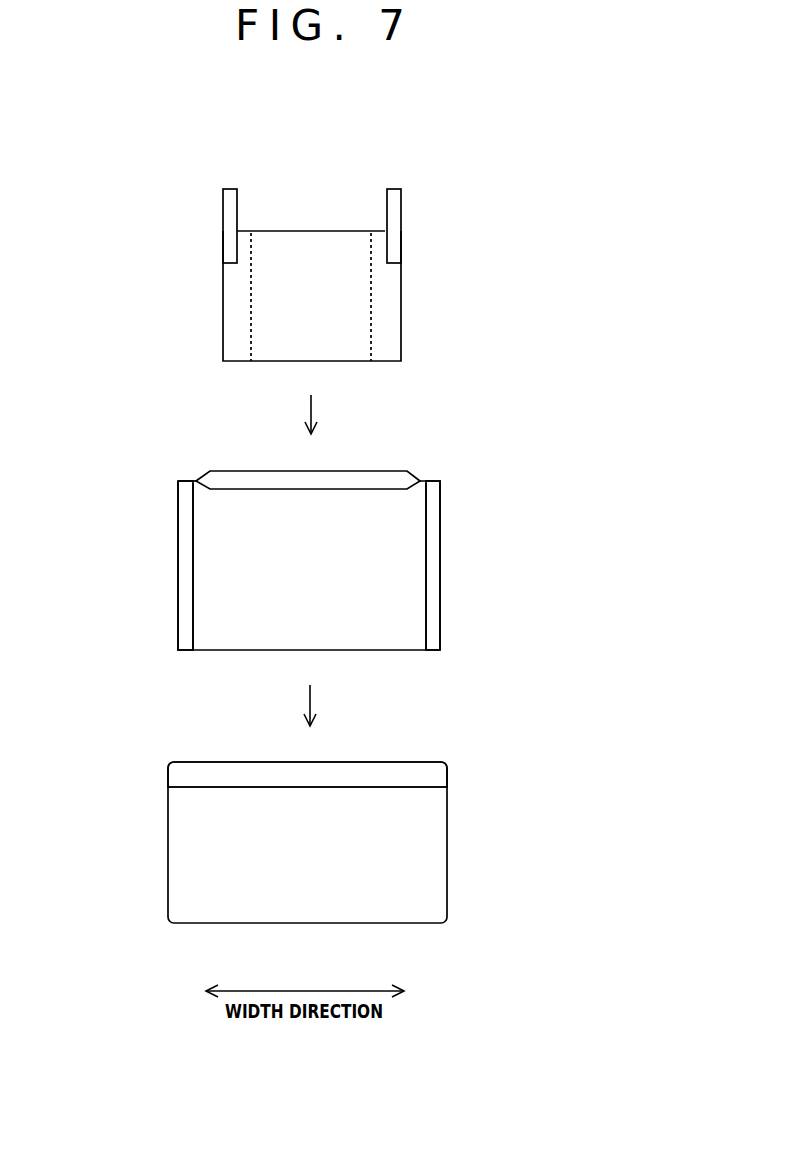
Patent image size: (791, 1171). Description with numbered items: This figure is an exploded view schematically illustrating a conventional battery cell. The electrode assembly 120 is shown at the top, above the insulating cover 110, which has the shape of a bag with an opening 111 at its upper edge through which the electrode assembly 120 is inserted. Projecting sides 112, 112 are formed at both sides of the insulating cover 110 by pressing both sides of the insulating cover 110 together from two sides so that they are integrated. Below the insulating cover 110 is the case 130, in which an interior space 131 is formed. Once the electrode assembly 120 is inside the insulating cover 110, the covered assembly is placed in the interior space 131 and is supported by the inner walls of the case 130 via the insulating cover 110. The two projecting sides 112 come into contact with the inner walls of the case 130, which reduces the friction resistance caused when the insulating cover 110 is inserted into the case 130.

The insulating cover 110 is at (325, 523).
The opening 111 is at (252, 485).
The projecting sides 112 is at (187, 562).
The electrode assembly 120 is at (423, 268).
The case 130 is at (355, 807).
The interior space 131 is at (221, 778).